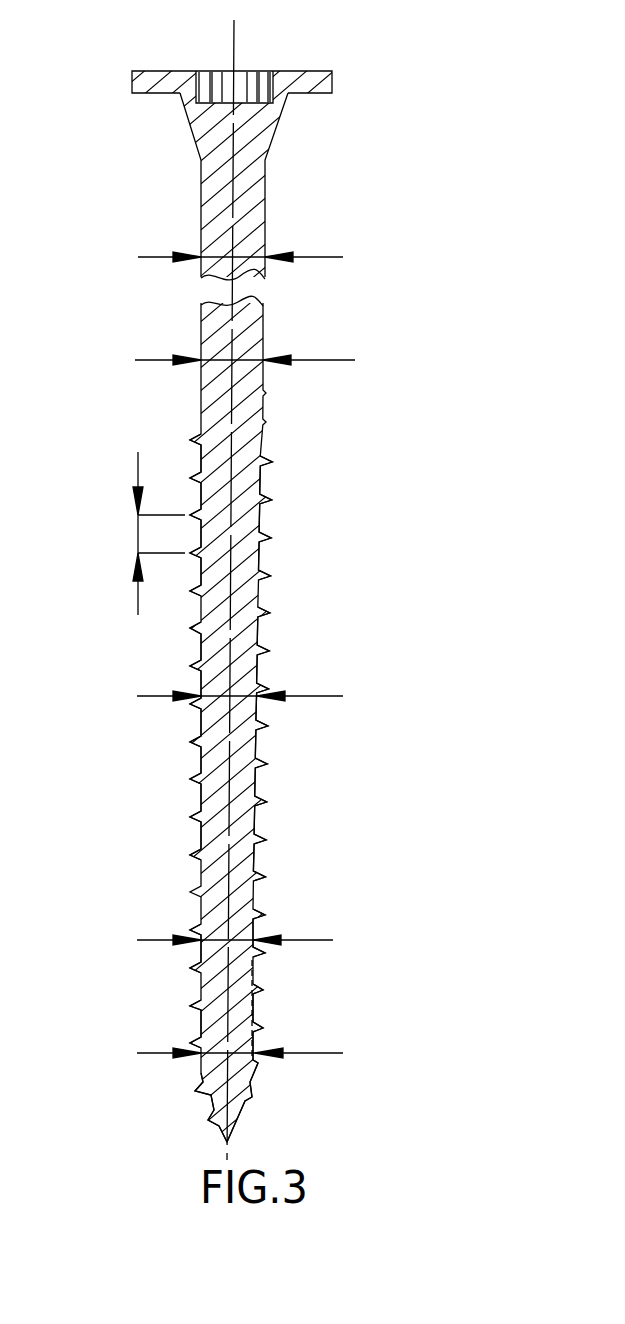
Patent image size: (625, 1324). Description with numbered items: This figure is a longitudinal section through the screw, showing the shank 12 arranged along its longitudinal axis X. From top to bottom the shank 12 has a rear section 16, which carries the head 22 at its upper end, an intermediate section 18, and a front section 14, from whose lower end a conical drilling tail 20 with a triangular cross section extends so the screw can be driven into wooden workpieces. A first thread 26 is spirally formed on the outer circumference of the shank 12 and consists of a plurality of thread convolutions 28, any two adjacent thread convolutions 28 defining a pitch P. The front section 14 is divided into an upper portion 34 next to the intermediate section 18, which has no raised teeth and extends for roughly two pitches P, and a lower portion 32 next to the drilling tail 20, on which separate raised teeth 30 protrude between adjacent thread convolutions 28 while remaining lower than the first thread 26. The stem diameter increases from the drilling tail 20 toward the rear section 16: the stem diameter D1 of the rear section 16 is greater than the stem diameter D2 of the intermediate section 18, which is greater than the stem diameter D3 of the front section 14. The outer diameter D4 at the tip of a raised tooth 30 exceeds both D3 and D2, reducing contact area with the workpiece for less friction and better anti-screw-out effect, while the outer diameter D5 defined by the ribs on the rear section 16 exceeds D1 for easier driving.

The longitudinal axis X is at (235, 32).
The head 22 is at (333, 82).
The rear section 16 is at (253, 200).
The shank 12 is at (215, 423).
The thread convolutions 28 is at (263, 490).
The first thread 26 is at (262, 642).
The intermediate section 18 is at (212, 760).
The upper portion 34 is at (252, 938).
The front section 14 is at (200, 980).
The raised teeth 30 is at (260, 1013).
The lower portion 32 is at (207, 1027).
The drilling tail 20 is at (220, 1128).
The pitch P is at (138, 532).
The stem diameter of the rear section D1 is at (241, 239).
The outer diameter defined by the ribs D5 is at (245, 340).
The stem diameter of the intermediate section D2 is at (240, 678).
The stem diameter of the front section D3 is at (236, 921).
The outer diameter at the tip of the raised tooth D4 is at (240, 1036).